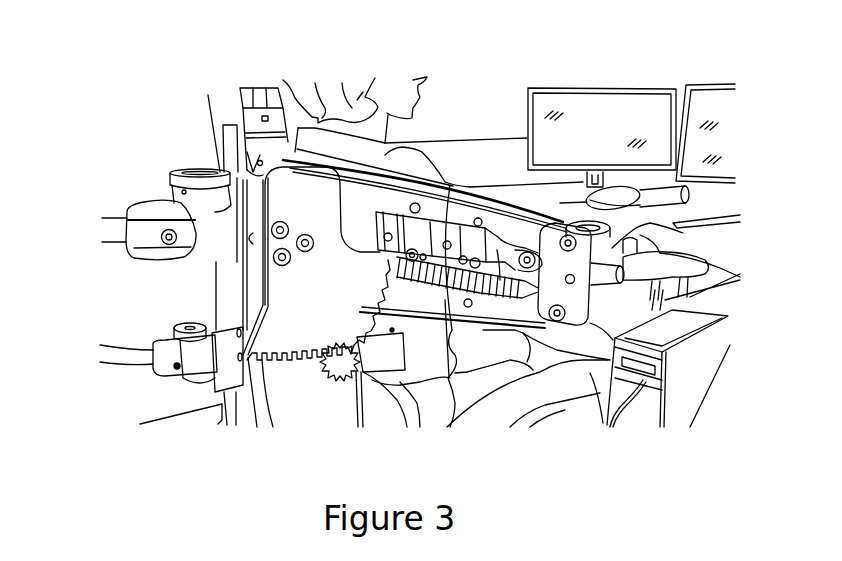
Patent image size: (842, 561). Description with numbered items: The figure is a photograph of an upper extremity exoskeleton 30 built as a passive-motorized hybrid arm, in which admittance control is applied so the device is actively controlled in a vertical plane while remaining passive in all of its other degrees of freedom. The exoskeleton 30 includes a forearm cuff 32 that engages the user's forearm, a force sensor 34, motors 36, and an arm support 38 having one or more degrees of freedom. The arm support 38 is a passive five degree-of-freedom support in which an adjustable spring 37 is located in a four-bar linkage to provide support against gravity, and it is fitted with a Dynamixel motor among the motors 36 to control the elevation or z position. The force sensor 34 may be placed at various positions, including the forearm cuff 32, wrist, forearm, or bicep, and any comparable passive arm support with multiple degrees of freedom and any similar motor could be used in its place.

The upper extremity exoskeleton 30 is at (95, 303).
The forearm cuff 32 is at (708, 272).
The force sensor 34 is at (683, 233).
The motors 36 is at (262, 118).
The adjustable spring 37 is at (450, 427).
The arm support 38 is at (497, 215).